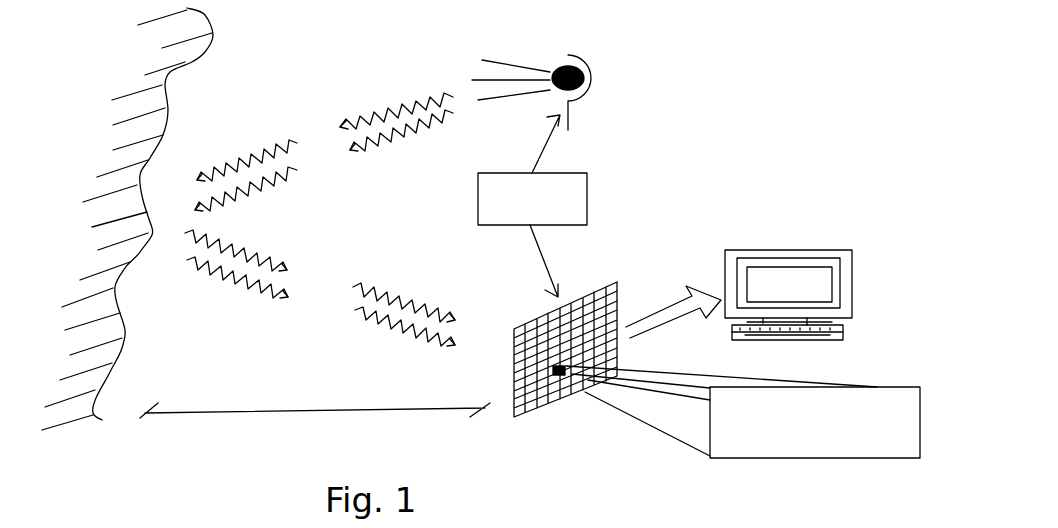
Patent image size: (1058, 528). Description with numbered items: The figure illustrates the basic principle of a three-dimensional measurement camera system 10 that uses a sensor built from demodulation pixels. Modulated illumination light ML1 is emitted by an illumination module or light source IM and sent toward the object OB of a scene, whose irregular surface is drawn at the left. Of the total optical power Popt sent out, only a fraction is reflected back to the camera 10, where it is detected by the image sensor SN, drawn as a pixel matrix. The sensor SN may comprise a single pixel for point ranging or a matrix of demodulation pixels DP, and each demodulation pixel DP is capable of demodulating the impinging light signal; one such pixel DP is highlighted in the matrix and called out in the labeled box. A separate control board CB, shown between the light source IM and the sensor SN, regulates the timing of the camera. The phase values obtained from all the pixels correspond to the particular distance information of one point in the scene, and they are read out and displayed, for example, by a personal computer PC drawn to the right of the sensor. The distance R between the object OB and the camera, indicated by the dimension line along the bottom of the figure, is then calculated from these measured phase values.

The camera 10 is at (773, 108).
The object OB is at (213, 36).
The modulated illumination light ML1 is at (415, 95).
The optical power Popt is at (404, 326).
The illumination module IM is at (592, 80).
The control board CB is at (588, 195).
The image sensor SN is at (617, 282).
The personal computer PC is at (808, 248).
The demodulation pixel DP is at (798, 459).
The distance R is at (315, 422).